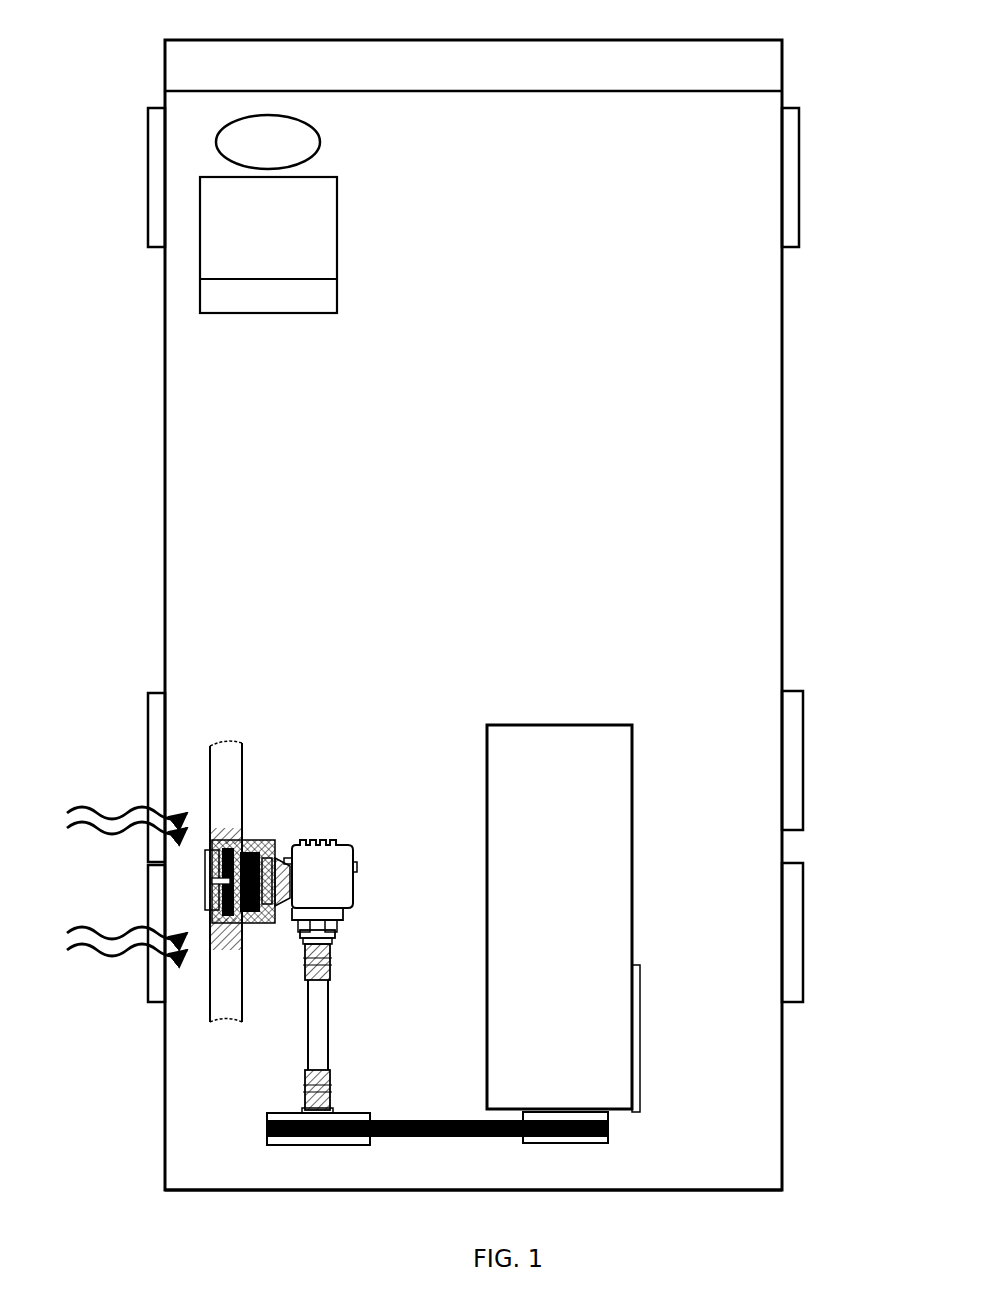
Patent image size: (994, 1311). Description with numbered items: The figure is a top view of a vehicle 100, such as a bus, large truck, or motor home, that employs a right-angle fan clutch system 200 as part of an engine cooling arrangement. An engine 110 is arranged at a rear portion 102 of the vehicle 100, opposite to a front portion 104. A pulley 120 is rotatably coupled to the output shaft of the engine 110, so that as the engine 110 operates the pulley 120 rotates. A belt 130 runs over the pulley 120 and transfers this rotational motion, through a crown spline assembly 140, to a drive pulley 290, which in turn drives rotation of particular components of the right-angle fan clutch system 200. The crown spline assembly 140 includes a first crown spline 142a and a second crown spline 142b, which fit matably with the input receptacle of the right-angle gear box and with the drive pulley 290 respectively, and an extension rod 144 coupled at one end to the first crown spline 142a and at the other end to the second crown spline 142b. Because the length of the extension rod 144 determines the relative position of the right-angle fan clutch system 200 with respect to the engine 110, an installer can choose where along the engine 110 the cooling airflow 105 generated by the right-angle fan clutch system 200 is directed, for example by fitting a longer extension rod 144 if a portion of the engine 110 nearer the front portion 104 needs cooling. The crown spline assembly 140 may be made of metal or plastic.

The vehicle 100 is at (95, 74).
The rear portion 102 is at (280, 1194).
The front portion 104 is at (728, 38).
The cooling airflow 105 is at (75, 798).
The engine 110 is at (630, 725).
The pulley 120 is at (558, 1143).
The belt 130 is at (388, 1137).
The crown spline assembly 140 is at (388, 1022).
The first crown spline 142a is at (330, 970).
The second crown spline 142b is at (366, 1080).
The extension rod 144 is at (316, 1026).
The right-angle fan clutch system 200 is at (382, 810).
The drive pulley 290 is at (306, 1145).